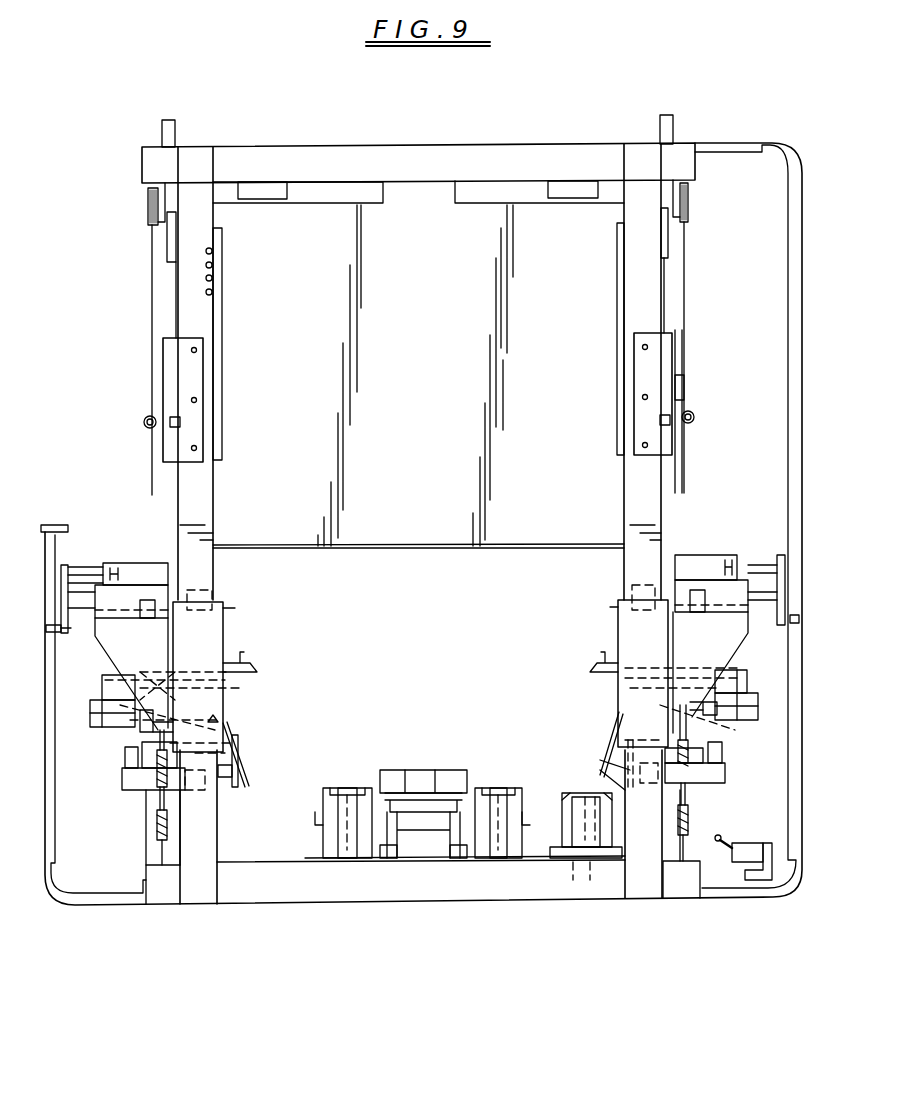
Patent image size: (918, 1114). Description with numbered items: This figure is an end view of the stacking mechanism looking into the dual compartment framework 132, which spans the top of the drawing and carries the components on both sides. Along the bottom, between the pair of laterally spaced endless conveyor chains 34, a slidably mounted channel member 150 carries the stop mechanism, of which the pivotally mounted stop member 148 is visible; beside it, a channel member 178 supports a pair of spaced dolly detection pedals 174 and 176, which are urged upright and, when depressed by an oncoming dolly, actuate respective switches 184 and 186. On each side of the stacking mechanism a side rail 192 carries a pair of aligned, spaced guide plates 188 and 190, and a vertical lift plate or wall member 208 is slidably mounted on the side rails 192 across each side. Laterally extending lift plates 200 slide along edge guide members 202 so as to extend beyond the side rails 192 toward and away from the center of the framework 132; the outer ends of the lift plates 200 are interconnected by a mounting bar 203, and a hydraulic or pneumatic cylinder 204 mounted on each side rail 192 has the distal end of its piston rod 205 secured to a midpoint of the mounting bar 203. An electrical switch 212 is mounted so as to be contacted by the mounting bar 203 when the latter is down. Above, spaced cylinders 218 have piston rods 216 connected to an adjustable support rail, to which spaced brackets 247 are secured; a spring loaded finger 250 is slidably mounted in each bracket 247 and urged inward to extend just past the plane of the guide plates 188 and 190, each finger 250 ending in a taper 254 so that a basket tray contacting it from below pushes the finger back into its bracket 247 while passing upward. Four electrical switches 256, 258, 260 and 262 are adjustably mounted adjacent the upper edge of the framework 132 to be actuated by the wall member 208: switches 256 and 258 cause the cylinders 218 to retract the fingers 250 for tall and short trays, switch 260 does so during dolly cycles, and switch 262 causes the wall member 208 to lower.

The framework 132 is at (502, 156).
The electrical switch 262 is at (230, 252).
The electrical switch 260 is at (215, 265).
The electrical switch 258 is at (215, 278).
The electrical switch 256 is at (215, 292).
The vertical lift plate or wall member 208 is at (222, 420).
The piston rod 216 is at (85, 573).
The cylinder 218 is at (157, 566).
The bracket 247 is at (215, 600).
The spring loaded finger 250 is at (227, 605).
The taper 254 is at (235, 608).
The lift plate 200 is at (258, 672).
The edge guide member 202 is at (682, 664).
The mounting bar 203 is at (102, 683).
The piston rod 205 is at (135, 706).
The hydraulic or pneumatic cylinder 204 is at (137, 732).
The side rail 192 is at (220, 730).
The guide plate 188 is at (248, 758).
The guide plate 190 is at (605, 790).
The dolly detection pedal 174 is at (583, 795).
The dolly detection pedal 176 is at (563, 800).
The stop member 148 is at (462, 770).
The endless conveyor chain 34 is at (350, 790).
The channel member 150 is at (385, 838).
The channel member 178 is at (558, 862).
The switch 184 is at (573, 862).
The switch 186 is at (590, 862).
The electrical switch 212 is at (745, 850).